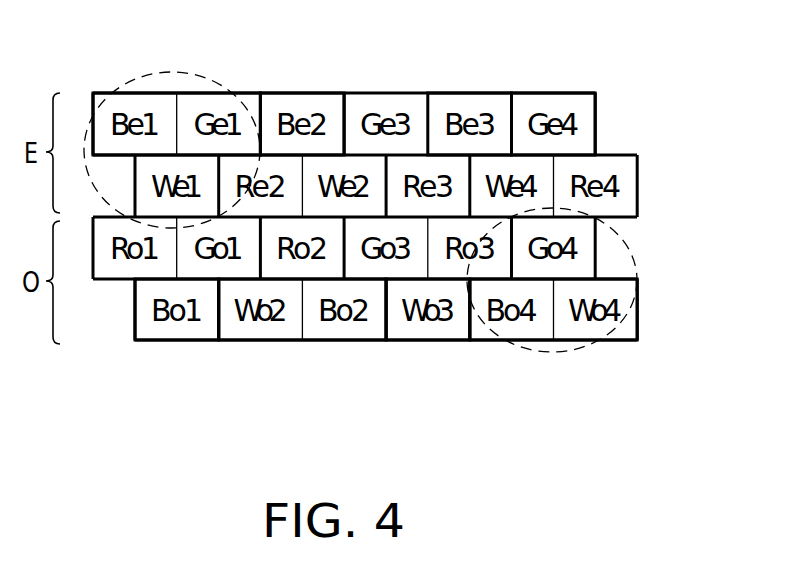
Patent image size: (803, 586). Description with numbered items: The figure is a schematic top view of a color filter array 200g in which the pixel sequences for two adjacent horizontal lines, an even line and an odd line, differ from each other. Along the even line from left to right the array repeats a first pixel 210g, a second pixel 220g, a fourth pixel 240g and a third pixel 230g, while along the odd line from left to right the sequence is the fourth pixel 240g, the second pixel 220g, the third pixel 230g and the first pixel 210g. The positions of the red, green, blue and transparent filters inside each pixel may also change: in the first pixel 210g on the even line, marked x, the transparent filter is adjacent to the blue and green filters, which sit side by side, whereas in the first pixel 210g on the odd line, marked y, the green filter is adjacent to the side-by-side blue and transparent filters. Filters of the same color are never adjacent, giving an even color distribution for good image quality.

The color filter array 200g is at (681, 457).
The first pixel 210g is at (135, 93).
The second pixel 220g is at (302, 93).
The third pixel 230g is at (553, 93).
The fourth pixel 240g is at (470, 93).
The first pixel on the even line x is at (203, 72).
The first pixel on the odd line y is at (589, 352).